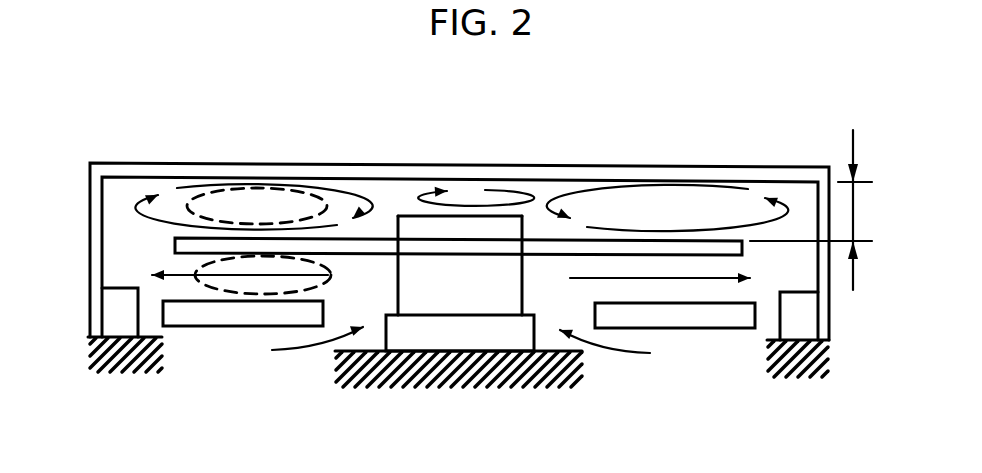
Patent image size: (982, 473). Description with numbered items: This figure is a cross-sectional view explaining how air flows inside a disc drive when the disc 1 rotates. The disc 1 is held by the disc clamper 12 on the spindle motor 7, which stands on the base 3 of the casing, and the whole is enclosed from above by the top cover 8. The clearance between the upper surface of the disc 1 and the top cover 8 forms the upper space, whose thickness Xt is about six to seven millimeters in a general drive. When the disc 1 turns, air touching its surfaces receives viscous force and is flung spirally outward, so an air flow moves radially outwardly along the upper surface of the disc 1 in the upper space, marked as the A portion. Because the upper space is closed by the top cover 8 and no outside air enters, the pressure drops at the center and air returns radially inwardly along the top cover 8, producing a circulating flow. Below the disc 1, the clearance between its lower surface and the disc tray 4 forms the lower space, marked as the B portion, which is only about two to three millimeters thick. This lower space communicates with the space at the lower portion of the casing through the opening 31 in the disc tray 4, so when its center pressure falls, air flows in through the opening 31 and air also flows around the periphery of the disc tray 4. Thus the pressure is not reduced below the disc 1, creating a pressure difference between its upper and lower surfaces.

The disc 1 is at (548, 238).
The base 3 is at (108, 315).
The disc tray 4 is at (718, 322).
The spindle motor 7 is at (455, 307).
The top cover 8 is at (190, 162).
The disc clamper 12 is at (402, 217).
The opening 31 is at (572, 320).
The upper space portion A is at (292, 197).
The lower space portion B is at (247, 293).
The upper space thickness Xt is at (824, 210).